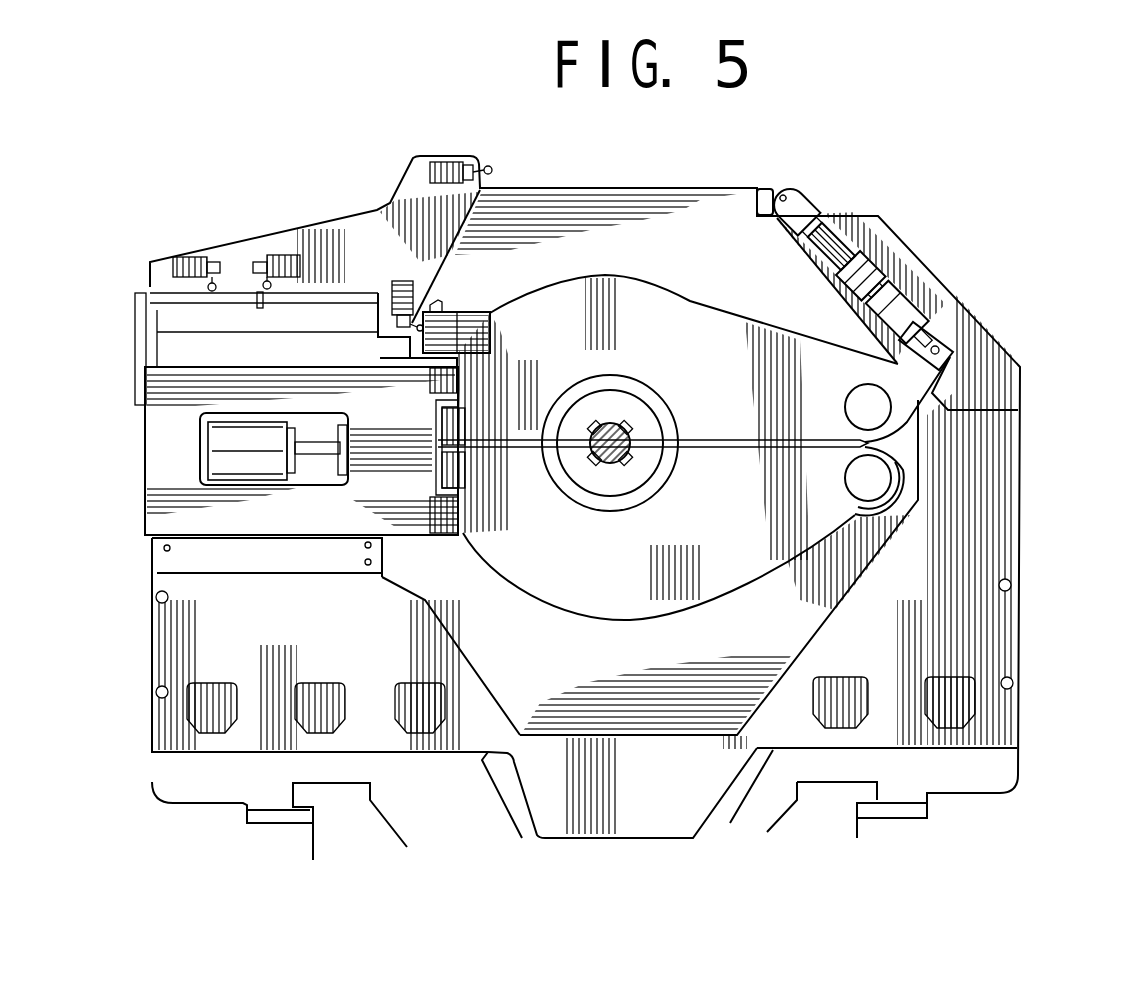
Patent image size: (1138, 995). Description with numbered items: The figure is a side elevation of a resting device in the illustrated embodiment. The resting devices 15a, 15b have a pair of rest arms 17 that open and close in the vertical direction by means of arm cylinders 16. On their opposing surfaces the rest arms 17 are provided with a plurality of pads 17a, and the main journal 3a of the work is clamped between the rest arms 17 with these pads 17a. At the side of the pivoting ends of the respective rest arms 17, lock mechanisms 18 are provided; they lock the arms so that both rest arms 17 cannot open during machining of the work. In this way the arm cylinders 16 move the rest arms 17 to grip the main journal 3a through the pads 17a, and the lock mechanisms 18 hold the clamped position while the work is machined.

The main journal 3a is at (610, 458).
The resting device 15a is at (1023, 536).
The resting device 15b is at (1023, 536).
The arm cylinder 16 is at (843, 251).
The rest arm 17 is at (808, 467).
The pad 17a is at (628, 458).
The lock mechanism 18 is at (160, 434).